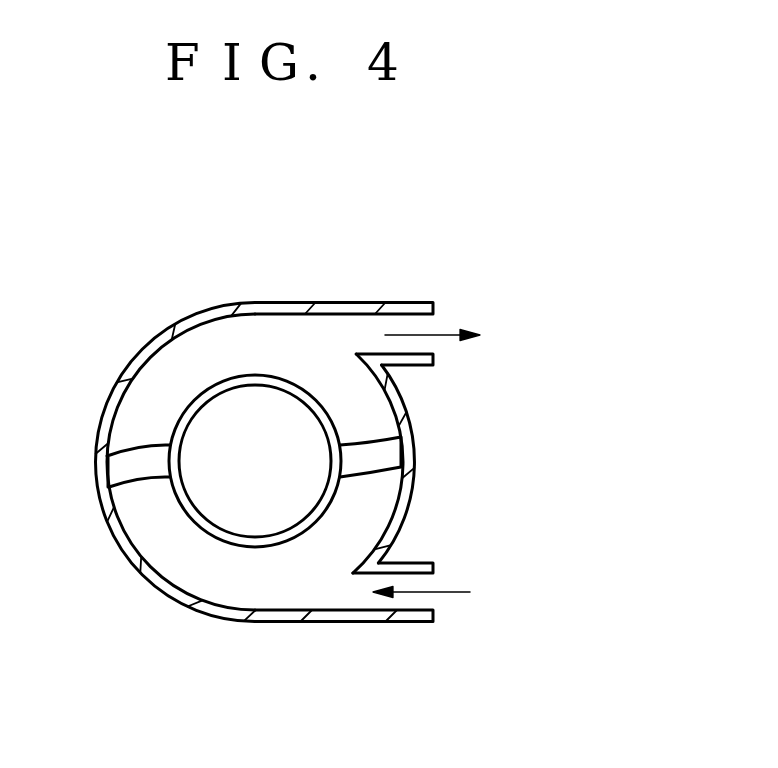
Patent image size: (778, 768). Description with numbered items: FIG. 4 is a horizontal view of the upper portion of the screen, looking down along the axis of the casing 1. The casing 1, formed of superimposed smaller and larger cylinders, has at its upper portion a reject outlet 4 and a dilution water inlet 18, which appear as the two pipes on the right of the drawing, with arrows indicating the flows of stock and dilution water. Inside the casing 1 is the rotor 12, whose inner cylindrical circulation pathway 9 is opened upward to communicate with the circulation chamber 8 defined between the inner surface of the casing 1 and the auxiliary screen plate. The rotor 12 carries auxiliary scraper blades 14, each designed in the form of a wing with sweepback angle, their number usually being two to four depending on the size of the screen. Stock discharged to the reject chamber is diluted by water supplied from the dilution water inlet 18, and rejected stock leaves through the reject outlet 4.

The casing 1 is at (408, 397).
The reject outlet 4 is at (403, 303).
The circulation chamber 8 is at (138, 408).
The circulation pathway 9 is at (267, 475).
The rotor 12 is at (177, 495).
The auxiliary scraper blade 14 is at (368, 465).
The dilution water inlet 18 is at (400, 622).